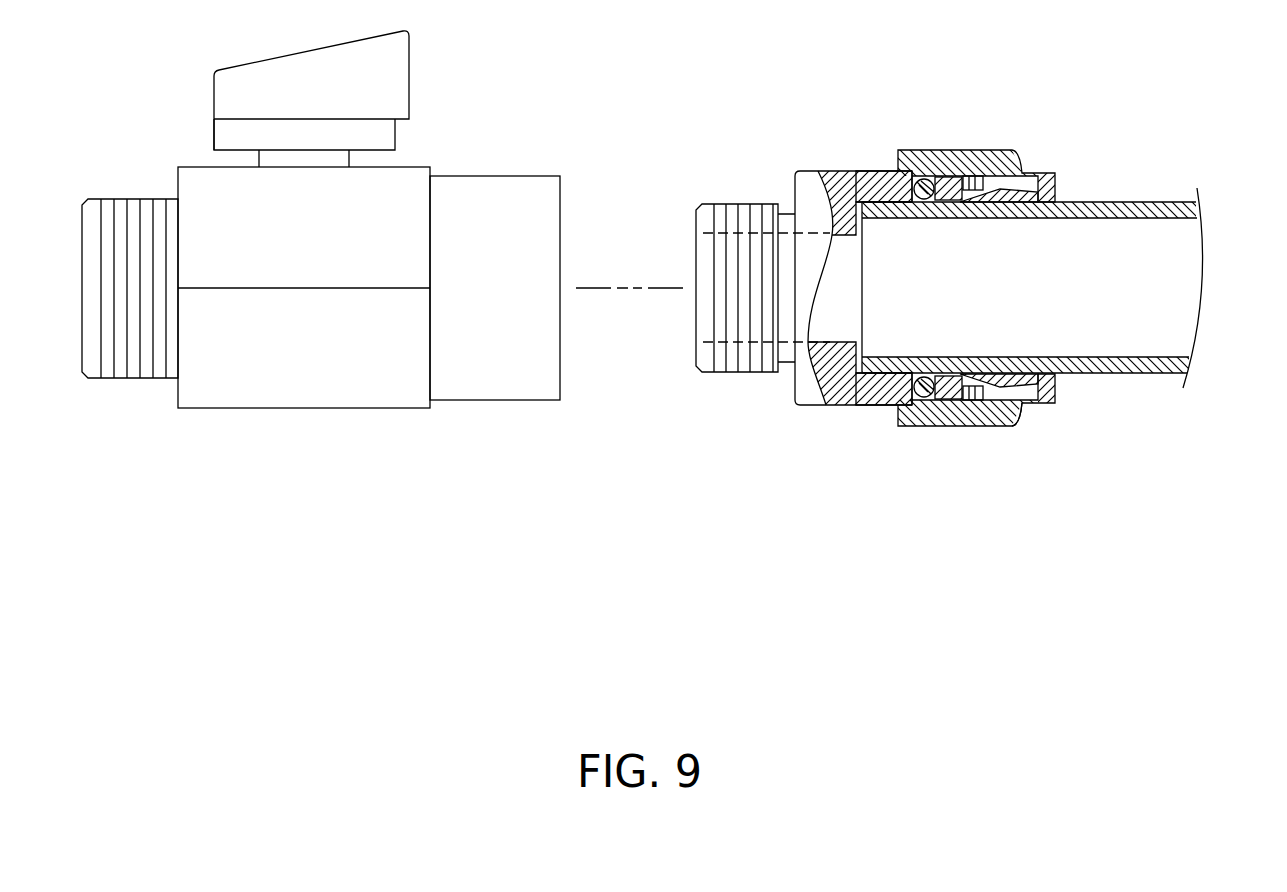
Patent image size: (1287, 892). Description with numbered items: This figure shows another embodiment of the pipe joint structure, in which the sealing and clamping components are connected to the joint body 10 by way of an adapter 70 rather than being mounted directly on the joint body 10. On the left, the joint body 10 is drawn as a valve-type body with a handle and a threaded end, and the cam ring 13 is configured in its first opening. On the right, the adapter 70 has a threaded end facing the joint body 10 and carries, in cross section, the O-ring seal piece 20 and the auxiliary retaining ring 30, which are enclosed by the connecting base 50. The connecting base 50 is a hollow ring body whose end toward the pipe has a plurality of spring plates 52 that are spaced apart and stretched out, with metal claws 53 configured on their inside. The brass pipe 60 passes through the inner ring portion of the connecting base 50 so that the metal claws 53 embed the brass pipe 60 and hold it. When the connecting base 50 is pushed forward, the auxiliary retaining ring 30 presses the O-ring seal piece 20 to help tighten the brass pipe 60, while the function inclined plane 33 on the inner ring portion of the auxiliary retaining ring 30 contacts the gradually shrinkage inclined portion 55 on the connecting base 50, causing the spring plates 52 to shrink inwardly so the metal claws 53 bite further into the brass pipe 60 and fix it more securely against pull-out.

The joint body 10 is at (186, 164).
The cam ring 13 is at (898, 388).
The O-ring seal piece 20 is at (908, 186).
The auxiliary retaining ring 30 is at (939, 181).
The function inclined plane 33 is at (953, 378).
The gradually shrinkage inclined portion 55 is at (948, 188).
The connecting base 50 is at (1053, 168).
The spring plates 52 is at (1018, 406).
The metal claws 53 is at (968, 351).
The brass pipe 60 is at (1183, 198).
The adapter 70 is at (783, 391).